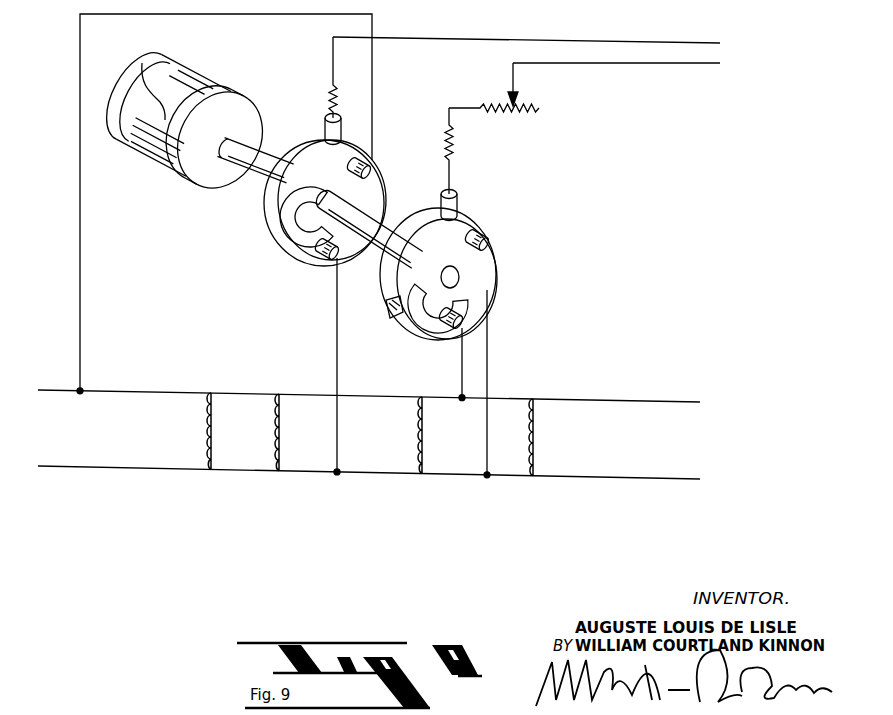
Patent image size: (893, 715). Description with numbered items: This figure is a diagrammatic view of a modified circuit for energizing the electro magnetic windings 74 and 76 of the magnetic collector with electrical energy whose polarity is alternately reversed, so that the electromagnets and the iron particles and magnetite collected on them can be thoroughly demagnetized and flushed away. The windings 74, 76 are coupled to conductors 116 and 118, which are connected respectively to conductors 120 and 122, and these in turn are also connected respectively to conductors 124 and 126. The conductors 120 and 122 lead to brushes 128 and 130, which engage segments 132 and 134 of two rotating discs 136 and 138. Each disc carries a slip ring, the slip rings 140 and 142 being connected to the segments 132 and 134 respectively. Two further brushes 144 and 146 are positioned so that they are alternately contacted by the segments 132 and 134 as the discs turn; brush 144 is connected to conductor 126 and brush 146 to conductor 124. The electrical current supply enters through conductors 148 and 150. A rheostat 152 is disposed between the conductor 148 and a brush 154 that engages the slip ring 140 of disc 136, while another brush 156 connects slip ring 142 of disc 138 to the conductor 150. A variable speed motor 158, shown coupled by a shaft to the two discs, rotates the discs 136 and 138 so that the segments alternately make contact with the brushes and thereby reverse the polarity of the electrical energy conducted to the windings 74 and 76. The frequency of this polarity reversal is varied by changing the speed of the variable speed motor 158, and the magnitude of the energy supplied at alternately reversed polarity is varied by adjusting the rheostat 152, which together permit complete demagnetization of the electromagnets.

The electro magnetic winding 74 is at (370, 475).
The electro magnetic winding 76 is at (533, 476).
The conductor 116 is at (644, 398).
The conductor 118 is at (640, 478).
The conductor 120 is at (460, 372).
The conductor 122 is at (340, 340).
The conductor 124 is at (84, 300).
The conductor 126 is at (487, 354).
The brush 128 is at (437, 298).
The brush 130 is at (322, 260).
The segment 132 is at (410, 292).
The segment 134 is at (296, 214).
The rotating disc 136 is at (478, 223).
The rotating disc 138 is at (312, 160).
The slip ring 140 is at (496, 284).
The slip ring 142 is at (292, 166).
The brush 144 is at (504, 246).
The brush 146 is at (372, 166).
The conductor 148 is at (606, 66).
The conductor 150 is at (604, 42).
The rheostat 152 is at (542, 112).
The brush 154 is at (456, 196).
The brush 156 is at (322, 118).
The variable speed motor 158 is at (144, 64).